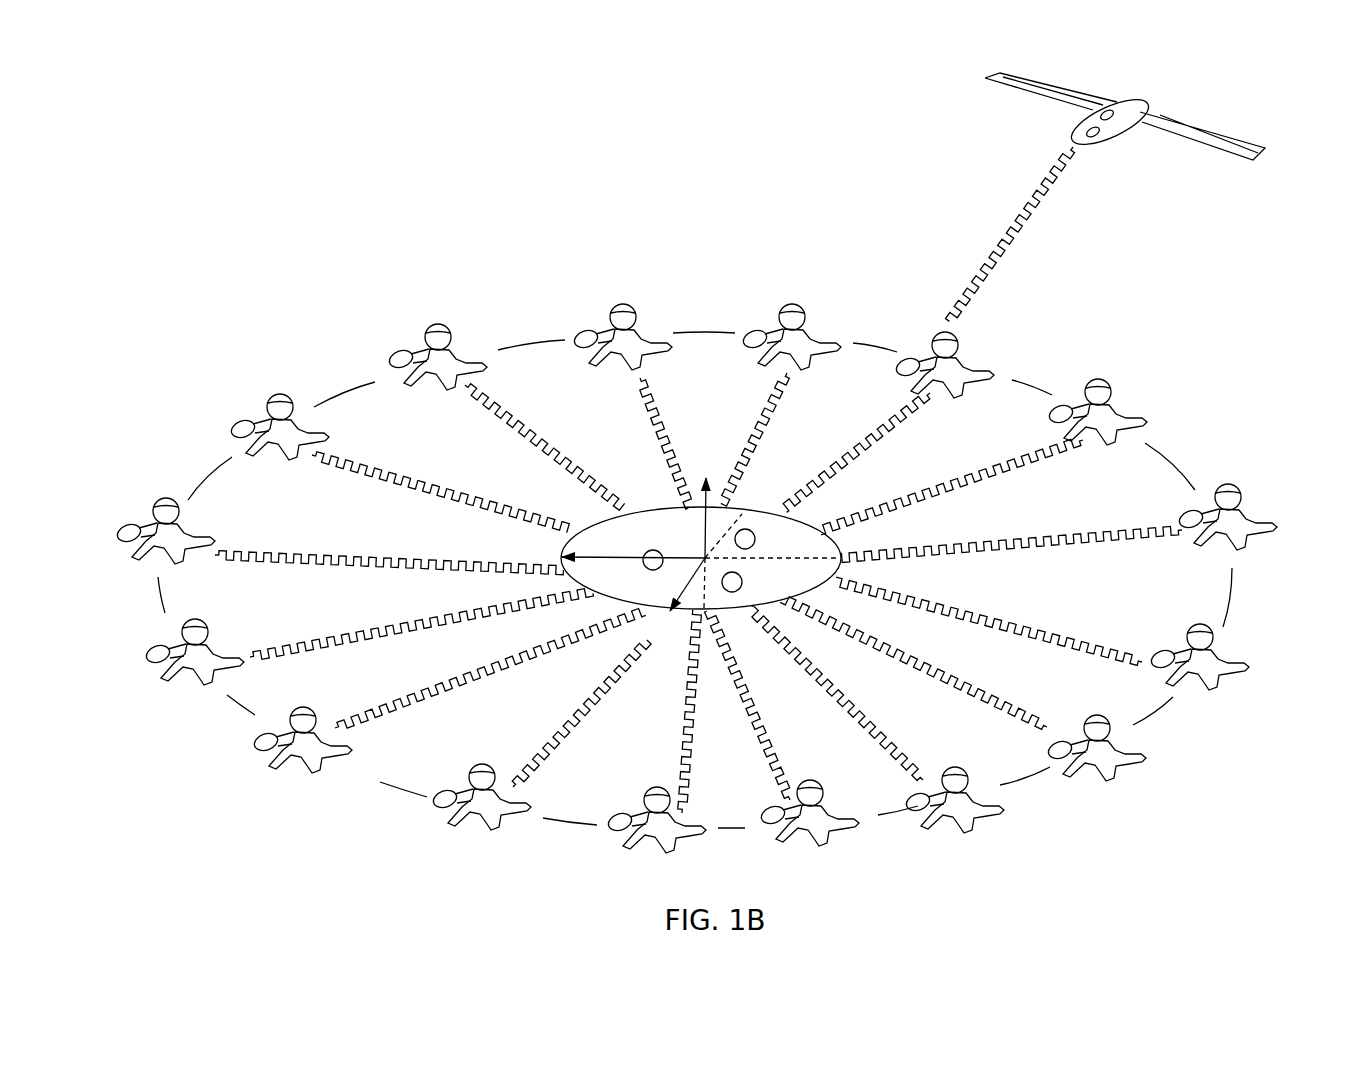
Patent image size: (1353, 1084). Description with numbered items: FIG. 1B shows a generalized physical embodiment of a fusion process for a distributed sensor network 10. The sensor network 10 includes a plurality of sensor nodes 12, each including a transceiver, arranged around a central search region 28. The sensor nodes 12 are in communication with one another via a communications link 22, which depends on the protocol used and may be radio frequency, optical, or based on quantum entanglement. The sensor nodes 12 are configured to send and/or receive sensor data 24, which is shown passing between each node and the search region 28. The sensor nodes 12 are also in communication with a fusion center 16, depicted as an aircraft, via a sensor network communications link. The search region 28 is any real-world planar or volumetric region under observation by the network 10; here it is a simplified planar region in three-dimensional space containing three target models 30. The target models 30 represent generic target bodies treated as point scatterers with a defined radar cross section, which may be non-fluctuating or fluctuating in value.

The distributed sensor network 10 is at (692, 330).
The sensor node 12 is at (410, 333).
The fusion center 16 is at (1170, 258).
The communications link 22 is at (542, 340).
The sensor data 24 is at (972, 252).
The search region 28 is at (1212, 428).
The target model 30 is at (1040, 797).